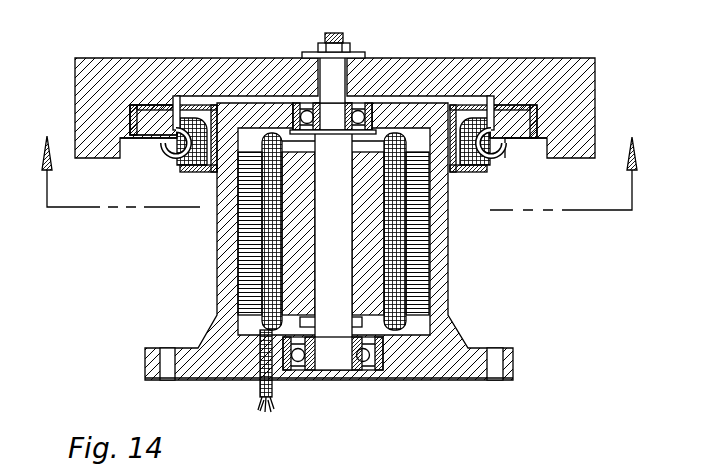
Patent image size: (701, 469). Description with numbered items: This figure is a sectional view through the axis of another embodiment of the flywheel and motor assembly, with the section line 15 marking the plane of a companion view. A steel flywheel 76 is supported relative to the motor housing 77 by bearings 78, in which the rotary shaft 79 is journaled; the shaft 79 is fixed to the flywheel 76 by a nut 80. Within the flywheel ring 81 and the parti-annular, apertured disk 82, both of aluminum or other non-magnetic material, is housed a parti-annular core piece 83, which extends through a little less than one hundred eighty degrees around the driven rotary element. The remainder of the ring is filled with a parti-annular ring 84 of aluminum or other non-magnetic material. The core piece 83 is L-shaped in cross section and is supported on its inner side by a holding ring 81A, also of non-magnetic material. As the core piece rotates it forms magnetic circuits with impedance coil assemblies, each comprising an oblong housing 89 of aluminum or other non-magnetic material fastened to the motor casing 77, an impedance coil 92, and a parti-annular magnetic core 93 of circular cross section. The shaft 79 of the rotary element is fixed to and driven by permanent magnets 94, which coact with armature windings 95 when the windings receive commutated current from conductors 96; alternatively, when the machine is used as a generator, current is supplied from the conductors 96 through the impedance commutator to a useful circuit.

The steel flywheel 76 is at (123, 62).
The motor housing 77 is at (437, 285).
The bearings 78 is at (304, 110).
The rotary shaft 79 is at (333, 236).
The nut 80 is at (349, 48).
The flywheel ring 81 is at (130, 106).
The holding ring 81A is at (176, 100).
The parti-annular apertured disk 82 is at (153, 103).
The parti-annular core piece 83 is at (150, 139).
The parti-annular ring 84 is at (528, 112).
The oblong housing 89 is at (214, 174).
The impedance coil 92 is at (163, 158).
The parti-annular magnetic core 93 is at (173, 144).
The permanent magnets 94 is at (304, 210).
The armature windings 95 is at (262, 270).
The conductors 96 is at (262, 388).
The section line 15- 15 is at (339, 162).